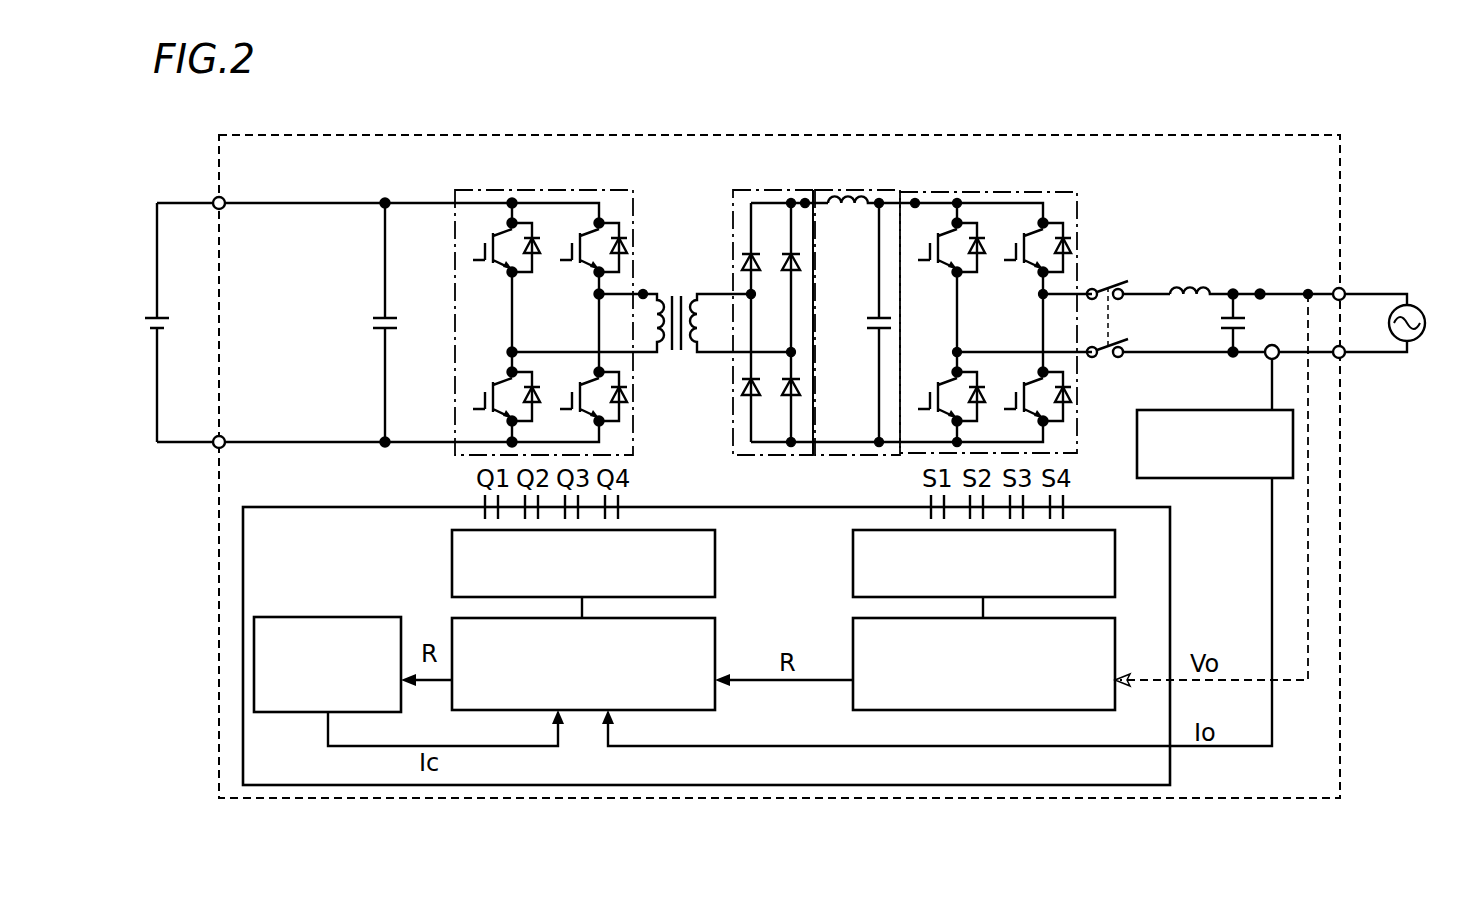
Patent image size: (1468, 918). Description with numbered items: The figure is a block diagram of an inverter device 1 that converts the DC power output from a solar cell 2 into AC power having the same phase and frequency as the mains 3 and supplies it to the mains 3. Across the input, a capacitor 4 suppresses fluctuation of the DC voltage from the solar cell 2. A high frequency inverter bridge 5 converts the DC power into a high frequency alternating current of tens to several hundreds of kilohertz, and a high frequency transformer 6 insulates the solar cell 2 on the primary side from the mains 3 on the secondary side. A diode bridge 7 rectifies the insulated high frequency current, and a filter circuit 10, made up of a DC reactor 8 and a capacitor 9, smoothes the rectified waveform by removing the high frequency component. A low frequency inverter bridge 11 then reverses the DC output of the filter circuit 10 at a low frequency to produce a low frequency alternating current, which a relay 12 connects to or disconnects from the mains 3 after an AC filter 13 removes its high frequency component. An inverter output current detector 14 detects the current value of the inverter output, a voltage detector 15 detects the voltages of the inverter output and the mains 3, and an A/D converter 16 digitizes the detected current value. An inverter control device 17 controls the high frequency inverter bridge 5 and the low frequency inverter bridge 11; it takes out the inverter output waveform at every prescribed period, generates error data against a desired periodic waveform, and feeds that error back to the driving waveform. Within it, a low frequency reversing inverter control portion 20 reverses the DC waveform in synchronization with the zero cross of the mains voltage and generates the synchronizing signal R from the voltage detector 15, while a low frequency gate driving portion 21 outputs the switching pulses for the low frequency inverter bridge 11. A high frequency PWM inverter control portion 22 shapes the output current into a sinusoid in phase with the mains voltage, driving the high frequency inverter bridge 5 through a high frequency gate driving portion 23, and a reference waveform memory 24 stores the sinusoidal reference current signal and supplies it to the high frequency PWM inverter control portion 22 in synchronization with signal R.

The inverter device 1 is at (1247, 134).
The solar cell 2 is at (157, 333).
The mains 3 is at (1427, 320).
The capacitor 4 is at (385, 333).
The high frequency inverter bridge 5 is at (493, 190).
The high frequency transformer 6 is at (677, 290).
The diode bridge 7 is at (776, 190).
The DC reactor 8 is at (851, 216).
The capacitor 9 is at (876, 336).
The filter circuit 10 is at (886, 307).
The low frequency inverter bridge 11 is at (1040, 192).
The relay 12 is at (1108, 281).
The AC filter 13 is at (1198, 288).
The inverter output current detector 14 is at (1266, 359).
The voltage detector 15 is at (1309, 290).
The A/D converter 16 is at (1226, 480).
The inverter control device 17 is at (243, 547).
The low frequency reversing inverter control portion 20 is at (853, 640).
The low frequency gate driving portion 21 is at (853, 560).
The high frequency PWM inverter control portion 22 is at (715, 640).
The high frequency gate driving portion 23 is at (715, 563).
The reference waveform memory 24 is at (313, 616).